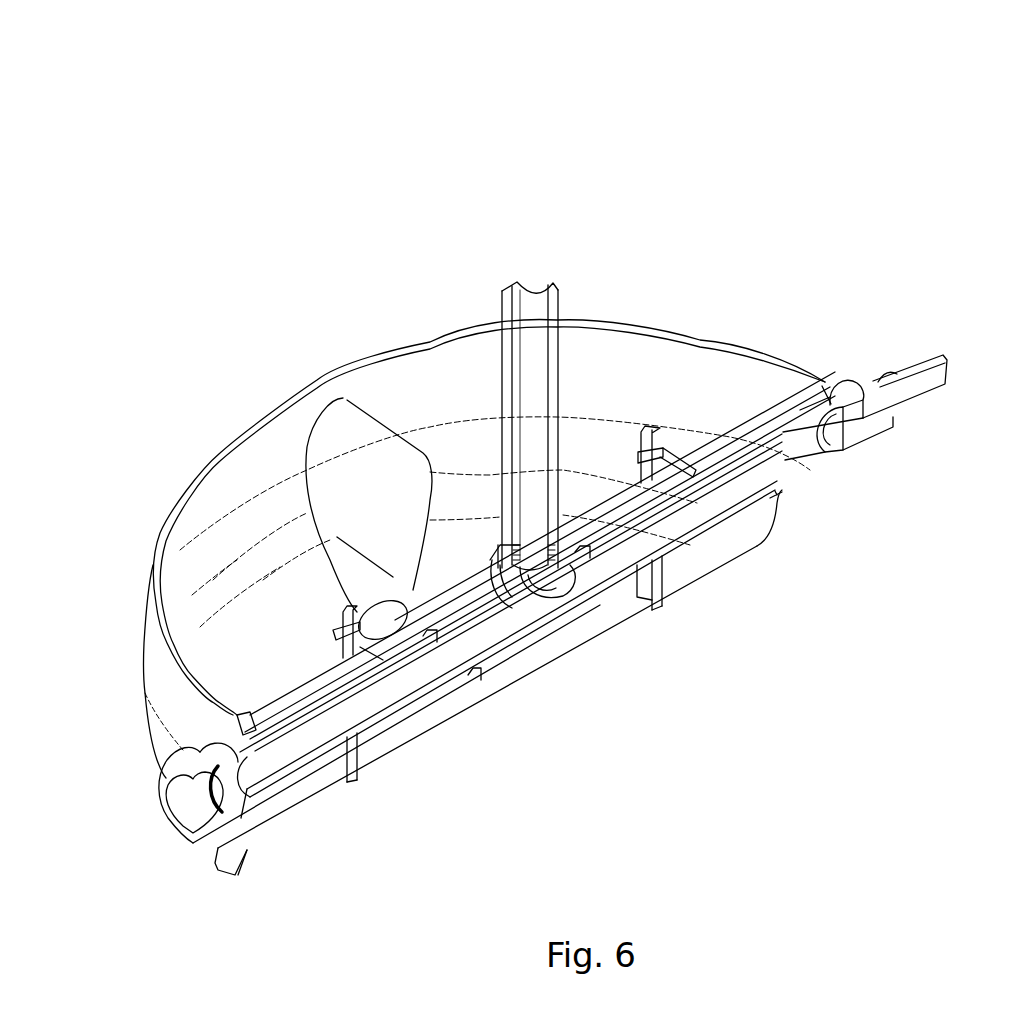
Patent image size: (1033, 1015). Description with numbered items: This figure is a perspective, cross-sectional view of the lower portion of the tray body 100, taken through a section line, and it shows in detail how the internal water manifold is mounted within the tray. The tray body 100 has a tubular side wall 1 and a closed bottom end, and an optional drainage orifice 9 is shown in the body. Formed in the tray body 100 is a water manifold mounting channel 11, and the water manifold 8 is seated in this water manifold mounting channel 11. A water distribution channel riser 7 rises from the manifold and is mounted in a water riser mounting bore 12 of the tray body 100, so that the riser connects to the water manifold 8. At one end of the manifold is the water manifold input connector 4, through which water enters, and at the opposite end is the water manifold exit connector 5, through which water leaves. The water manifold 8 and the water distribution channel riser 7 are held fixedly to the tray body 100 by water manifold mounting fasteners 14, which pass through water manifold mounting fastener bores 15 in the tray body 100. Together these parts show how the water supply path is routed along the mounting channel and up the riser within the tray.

The tray body 100 is at (218, 59).
The tubular side wall 1 is at (150, 598).
The water manifold input connector 4 is at (188, 843).
The water manifold exit connector 5 is at (880, 385).
The water distribution channel riser 7 is at (558, 303).
The water manifold 8 is at (633, 580).
The drainage orifice 9 is at (388, 615).
The water manifold mounting channel 11 is at (217, 869).
The water riser mounting bore 12 is at (505, 590).
The water manifold mounting fastener 14 is at (350, 607).
The water manifold mounting fastener bore 15 is at (349, 787).